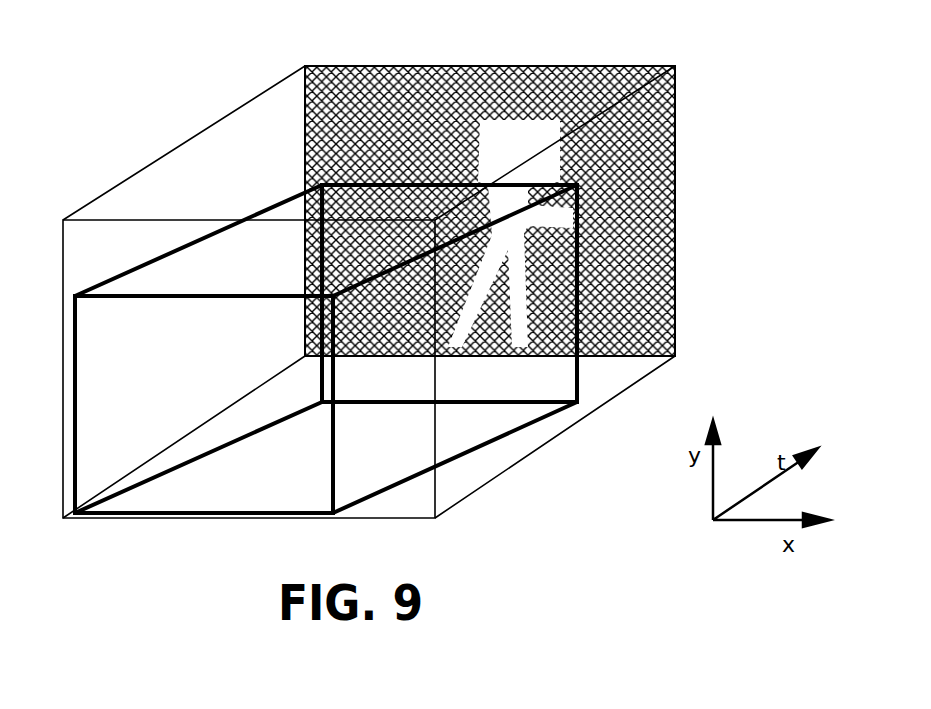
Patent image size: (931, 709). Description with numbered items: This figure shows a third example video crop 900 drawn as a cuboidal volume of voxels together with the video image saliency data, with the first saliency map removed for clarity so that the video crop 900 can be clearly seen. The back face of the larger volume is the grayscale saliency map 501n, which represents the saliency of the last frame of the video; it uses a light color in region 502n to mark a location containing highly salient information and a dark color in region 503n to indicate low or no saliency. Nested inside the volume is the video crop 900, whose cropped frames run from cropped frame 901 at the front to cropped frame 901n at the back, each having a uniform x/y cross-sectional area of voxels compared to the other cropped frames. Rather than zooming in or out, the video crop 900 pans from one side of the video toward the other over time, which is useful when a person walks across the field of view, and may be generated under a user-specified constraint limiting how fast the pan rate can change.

The video crop 900 is at (248, 215).
The cropped frame 901 is at (333, 490).
The cropped frame 901n is at (577, 373).
The grayscale saliency map 501n is at (676, 205).
The region 502n is at (498, 140).
The region 503n is at (652, 340).